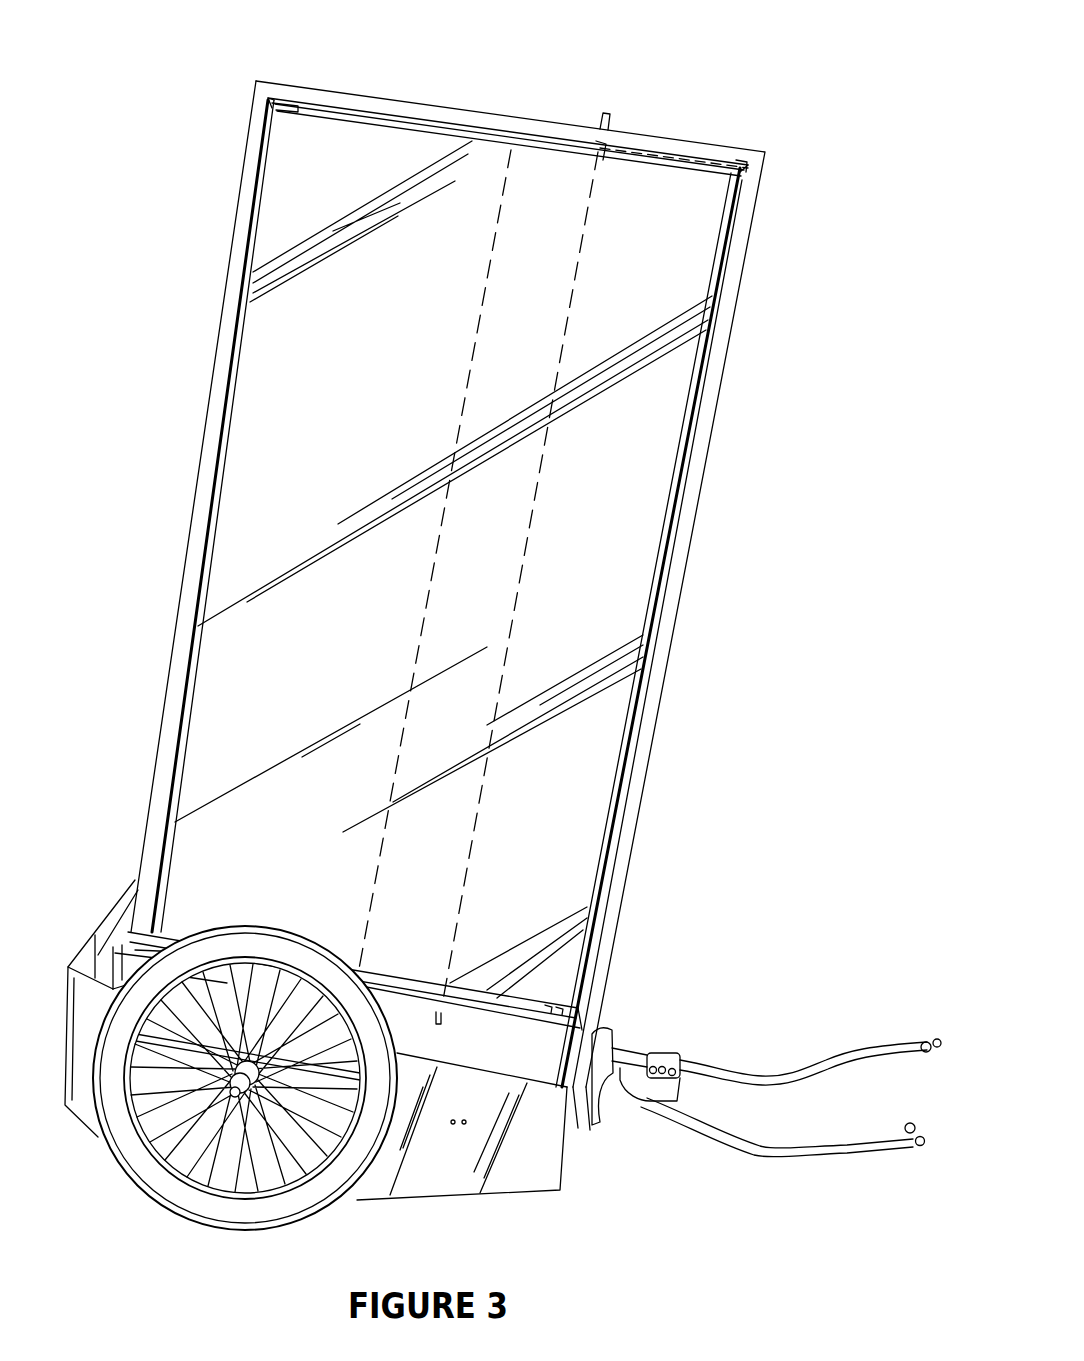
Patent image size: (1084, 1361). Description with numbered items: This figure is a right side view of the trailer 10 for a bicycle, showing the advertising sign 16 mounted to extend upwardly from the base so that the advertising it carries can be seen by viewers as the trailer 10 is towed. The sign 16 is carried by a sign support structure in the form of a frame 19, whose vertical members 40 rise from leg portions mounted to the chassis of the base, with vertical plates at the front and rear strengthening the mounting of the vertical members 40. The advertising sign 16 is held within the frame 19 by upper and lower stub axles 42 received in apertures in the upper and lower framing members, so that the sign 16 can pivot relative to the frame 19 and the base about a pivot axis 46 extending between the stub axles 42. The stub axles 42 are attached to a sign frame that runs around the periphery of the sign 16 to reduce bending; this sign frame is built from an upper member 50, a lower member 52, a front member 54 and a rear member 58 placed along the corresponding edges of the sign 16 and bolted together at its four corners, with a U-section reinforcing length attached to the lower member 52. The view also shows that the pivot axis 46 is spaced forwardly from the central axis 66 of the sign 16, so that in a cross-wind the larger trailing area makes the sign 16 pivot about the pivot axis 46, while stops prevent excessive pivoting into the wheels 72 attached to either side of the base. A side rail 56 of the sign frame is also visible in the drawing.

The trailer 10 is at (790, 100).
The advertising sign 16 is at (443, 486).
The frame 19 is at (665, 676).
The vertical members 40 is at (637, 772).
The stub axles 42 is at (605, 122).
The pivot axis 46 is at (525, 560).
The upper member 50 is at (360, 120).
The lower member 52 is at (487, 993).
The front member 54 is at (672, 463).
The inner side rail 56 is at (228, 465).
The rear member 58 is at (537, 997).
The central axis 66 is at (432, 566).
The wheels 72 is at (283, 928).